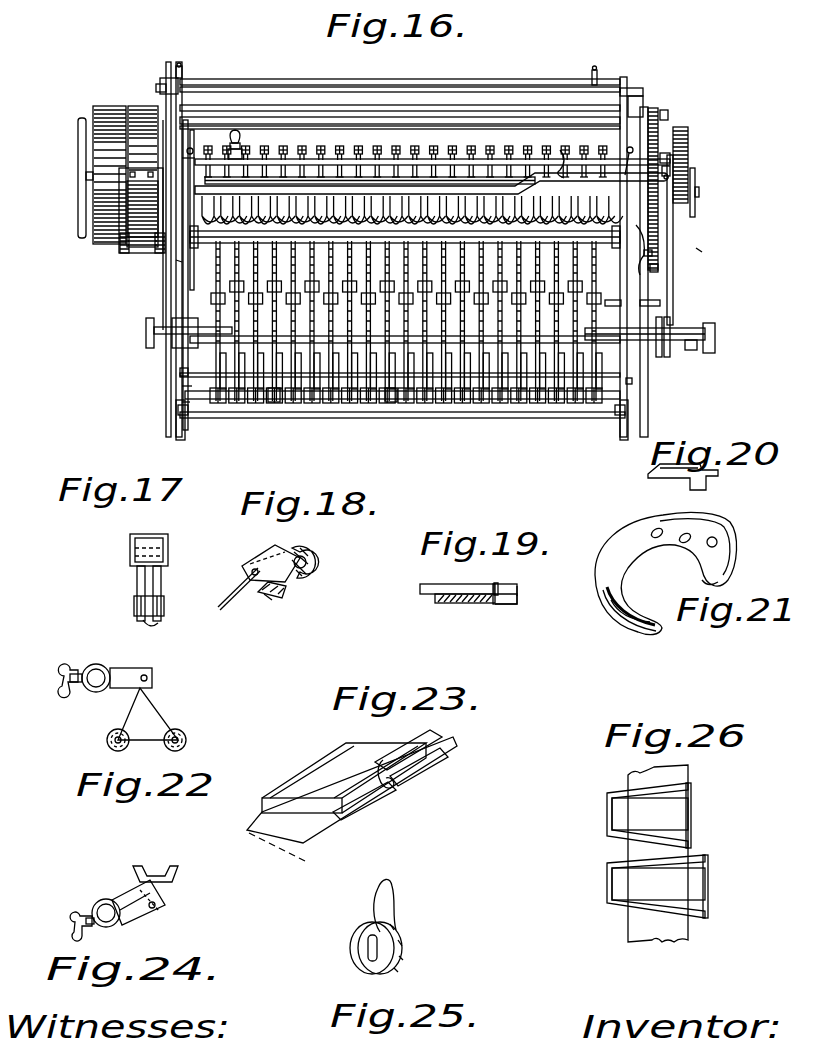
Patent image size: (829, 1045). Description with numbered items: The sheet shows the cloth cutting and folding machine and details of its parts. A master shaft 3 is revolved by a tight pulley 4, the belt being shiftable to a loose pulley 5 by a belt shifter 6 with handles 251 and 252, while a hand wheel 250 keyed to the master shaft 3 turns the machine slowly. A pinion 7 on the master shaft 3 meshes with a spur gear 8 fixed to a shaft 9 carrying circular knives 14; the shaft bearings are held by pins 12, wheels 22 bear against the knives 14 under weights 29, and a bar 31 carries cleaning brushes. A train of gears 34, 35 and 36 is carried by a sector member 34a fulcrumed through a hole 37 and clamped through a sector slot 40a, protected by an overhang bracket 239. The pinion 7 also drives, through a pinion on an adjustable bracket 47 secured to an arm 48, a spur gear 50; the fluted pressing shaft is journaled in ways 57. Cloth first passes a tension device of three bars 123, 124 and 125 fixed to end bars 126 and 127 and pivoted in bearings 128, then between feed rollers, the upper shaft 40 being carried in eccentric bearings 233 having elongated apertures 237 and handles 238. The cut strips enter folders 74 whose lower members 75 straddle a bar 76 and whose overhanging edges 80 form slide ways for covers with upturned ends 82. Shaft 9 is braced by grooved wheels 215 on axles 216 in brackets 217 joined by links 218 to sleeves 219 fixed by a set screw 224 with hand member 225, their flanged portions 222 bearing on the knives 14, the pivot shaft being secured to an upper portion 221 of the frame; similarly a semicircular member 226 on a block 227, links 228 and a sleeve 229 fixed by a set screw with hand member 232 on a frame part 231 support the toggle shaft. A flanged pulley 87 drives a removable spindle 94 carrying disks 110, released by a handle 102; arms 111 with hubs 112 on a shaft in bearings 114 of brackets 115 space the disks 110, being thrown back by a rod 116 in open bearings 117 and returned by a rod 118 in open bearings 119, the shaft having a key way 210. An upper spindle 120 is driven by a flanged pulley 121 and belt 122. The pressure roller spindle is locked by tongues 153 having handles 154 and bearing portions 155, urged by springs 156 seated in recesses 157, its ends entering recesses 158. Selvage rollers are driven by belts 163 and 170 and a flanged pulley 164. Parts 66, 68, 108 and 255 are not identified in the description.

In FIG. 16, the master shaft 3 is at (86, 178).
In FIG. 16, the tight pulley 4 is at (140, 240).
In FIG. 16, the loose pulley 5 is at (110, 244).
In FIG. 16, the belt shifter 6 is at (546, 175).
In FIG. 16, the pinion 7 is at (698, 206).
In FIG. 16, the spur gear 8 is at (690, 168).
In FIG. 16, the shaft 9 is at (688, 160).
In FIG. 16, the pins 12 is at (400, 80).
In FIG. 16, the circular knives 14 is at (380, 162).
In FIG. 16, the wheels 22 is at (380, 212).
In FIG. 16, the weights 29 is at (404, 290).
In FIG. 16, the bar 31 is at (497, 186).
In FIG. 16, the gear 34 is at (690, 148).
In FIG. 21, the sector member 34a is at (624, 540).
In FIG. 16, the gear 35 is at (676, 118).
In FIG. 16, the gear 36 is at (656, 118).
In FIG. 21, the hole 37 is at (716, 543).
In FIG. 16, the feed roller 40 is at (502, 118).
In FIG. 21, the sector slot 40a is at (620, 622).
In FIG. 16, the adjustable bracket 47 is at (652, 240).
In FIG. 16, the arm 48 is at (652, 252).
In FIG. 16, the spur gear 50 is at (660, 268).
In FIG. 16, the ways 57 is at (176, 260).
In FIG. 16, the stop 66 is at (639, 386).
In FIG. 16, the rod 68 is at (630, 368).
In FIG. 19, the folders 74 is at (455, 592).
In FIG. 23, the folders 74 is at (305, 795).
In FIG. 26, the folders 74 is at (618, 818).
In FIG. 19, the lower members 75 is at (514, 600).
In FIG. 23, the lower members 75 is at (410, 768).
In FIG. 19, the bar 76 is at (480, 594).
In FIG. 23, the bar 76 is at (440, 750).
In FIG. 26, the bar 76 is at (690, 781).
In FIG. 26, the overhanging edges 80 is at (664, 798).
In FIG. 19, the upturned ends 82 is at (508, 588).
In FIG. 23, the upturned ends 82 is at (395, 758).
In FIG. 26, the upturned ends 82 is at (692, 816).
In FIG. 16, the flanged pulley 87 is at (664, 352).
In FIG. 16, the spindle 94 is at (400, 338).
In FIG. 16, the handle 102 is at (148, 340).
In FIG. 16, the knob 108 is at (718, 340).
In FIG. 16, the disks 110 is at (420, 352).
In FIG. 16, the arms 111 is at (175, 342).
In FIG. 16, the hubs 112 is at (278, 402).
In FIG. 16, the bearings 114 is at (180, 402).
In FIG. 16, the brackets 115 is at (182, 420).
In FIG. 16, the rod 116 is at (182, 388).
In FIG. 16, the open bearings 117 is at (186, 370).
In FIG. 16, the rod 118 is at (468, 418).
In FIG. 16, the open bearings 119 is at (205, 410).
In FIG. 16, the spindle 120 is at (193, 324).
In FIG. 16, the flanged pulley 121 is at (690, 350).
In FIG. 16, the belt 122 is at (656, 302).
In FIG. 16, the bar 123 is at (290, 74).
In FIG. 16, the middle bar 124 is at (400, 74).
In FIG. 16, the bar 125 is at (452, 100).
In FIG. 16, the end bar 126 is at (178, 80).
In FIG. 16, the end bar 127 is at (600, 74).
In FIG. 16, the bearings 128 is at (168, 78).
In FIG. 18, the tongue 153 is at (275, 560).
In FIG. 18, the handle 154 is at (236, 594).
In FIG. 18, the bearing portion 155 is at (312, 548).
In FIG. 18, the spring 156 is at (292, 578).
In FIG. 18, the recess 157 is at (272, 592).
In FIG. 18, the recesses 158 is at (312, 562).
In FIG. 16, the belt 163 is at (712, 328).
In FIG. 16, the flanged pulley 164 is at (700, 250).
In FIG. 16, the belt 170 is at (166, 300).
In FIG. 16, the key way 210 is at (392, 402).
In FIG. 17, the circumferential grooved wheels 215 is at (160, 605).
In FIG. 22, the circumferential grooved wheels 215 is at (106, 740).
In FIG. 22, the axles 216 is at (110, 750).
In FIG. 22, the brackets 217 is at (152, 708).
In FIG. 17, the links 218 is at (132, 551).
In FIG. 22, the links 218 is at (152, 681).
In FIG. 17, the sleeves 219 is at (147, 535).
In FIG. 22, the sleeves 219 is at (95, 690).
In FIG. 16, the upper portion 221 is at (434, 162).
In FIG. 17, the outer flanged portions 222 is at (152, 624).
In FIG. 22, the set screw 224 is at (80, 668).
In FIG. 22, the hand member 225 is at (62, 688).
In FIG. 24, the screw threaded semicircular member 226 is at (170, 880).
In FIG. 24, the block 227 is at (126, 922).
In FIG. 24, the links 228 is at (135, 900).
In FIG. 24, the sleeve 229 is at (95, 905).
In FIG. 24, the part of frame 231 is at (107, 935).
In FIG. 24, the hand member 232 is at (70, 920).
In FIG. 25, the eccentric bearings 233 is at (400, 970).
In FIG. 21, the elongated apertures 237 is at (712, 585).
In FIG. 25, the elongated apertures 237 is at (380, 952).
In FIG. 25, the handles 238 is at (392, 896).
In FIG. 20, the overhang bracket 239 is at (712, 480).
In FIG. 16, the hand wheel 250 is at (88, 160).
In FIG. 16, the handle 251 is at (236, 146).
In FIG. 16, the handle 252 is at (625, 172).
In FIG. 16, the disk 255 is at (696, 182).